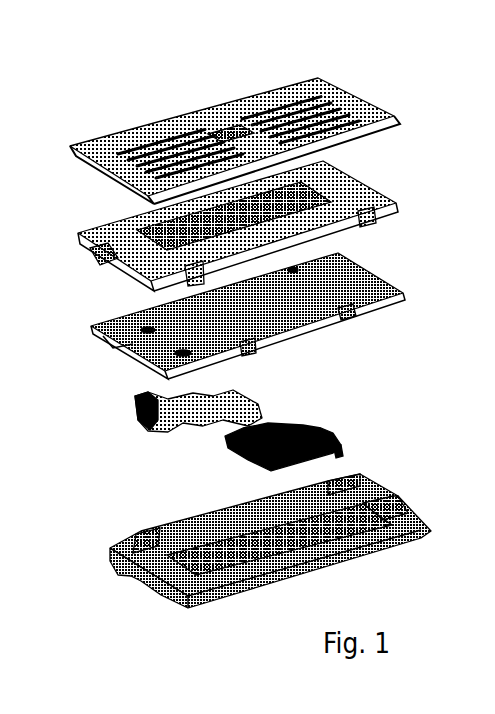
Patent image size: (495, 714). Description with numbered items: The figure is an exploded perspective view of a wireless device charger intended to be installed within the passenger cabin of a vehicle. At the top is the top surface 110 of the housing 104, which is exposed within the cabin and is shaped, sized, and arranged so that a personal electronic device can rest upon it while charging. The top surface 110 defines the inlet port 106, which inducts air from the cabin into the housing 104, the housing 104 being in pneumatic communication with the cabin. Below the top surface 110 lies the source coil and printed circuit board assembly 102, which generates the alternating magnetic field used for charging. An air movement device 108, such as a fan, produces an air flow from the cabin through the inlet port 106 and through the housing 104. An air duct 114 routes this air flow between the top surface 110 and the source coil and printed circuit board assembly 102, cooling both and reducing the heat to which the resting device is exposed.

The source coil and printed circuit board assembly 102 is at (385, 282).
The housing 104 is at (385, 195).
The inlet port 106 is at (95, 253).
The air movement device 108 is at (318, 428).
The top surface 110 is at (367, 97).
The air duct 114 is at (255, 403).